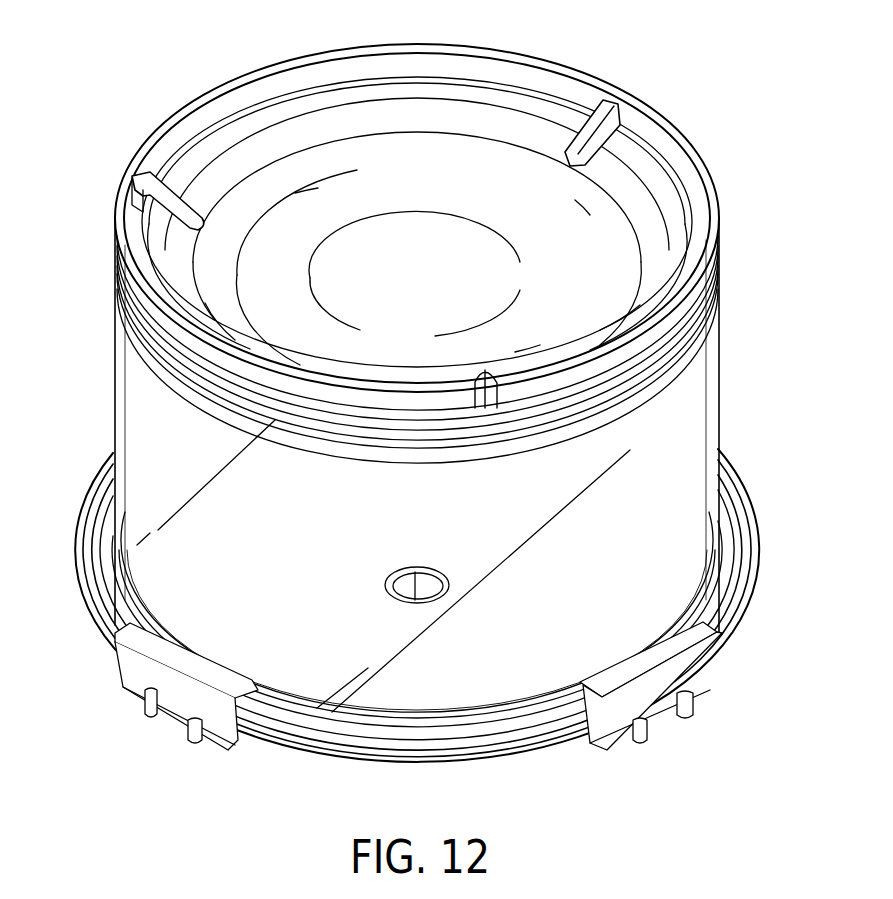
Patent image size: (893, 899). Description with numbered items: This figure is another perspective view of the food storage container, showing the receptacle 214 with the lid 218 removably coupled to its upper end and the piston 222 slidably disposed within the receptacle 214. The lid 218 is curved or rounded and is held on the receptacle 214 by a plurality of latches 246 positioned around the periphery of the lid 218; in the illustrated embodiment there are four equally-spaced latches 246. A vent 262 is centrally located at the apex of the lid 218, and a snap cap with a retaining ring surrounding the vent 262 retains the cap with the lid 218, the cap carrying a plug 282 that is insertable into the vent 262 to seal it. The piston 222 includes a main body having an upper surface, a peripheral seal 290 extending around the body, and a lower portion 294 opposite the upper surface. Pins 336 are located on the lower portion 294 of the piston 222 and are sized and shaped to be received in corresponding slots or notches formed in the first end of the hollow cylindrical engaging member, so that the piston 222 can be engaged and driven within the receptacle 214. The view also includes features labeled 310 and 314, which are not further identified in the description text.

The receptacle 214 is at (113, 352).
The lid 218 is at (273, 746).
The piston 222 is at (655, 220).
The latches 246 is at (171, 715).
The vent 262 is at (433, 578).
The plug 282 is at (411, 569).
The peripheral seal 290 is at (318, 432).
The lower portion 294 is at (307, 125).
The wall rib 310 is at (698, 322).
The interior cavity 314 is at (656, 502).
The pins 336 is at (150, 187).